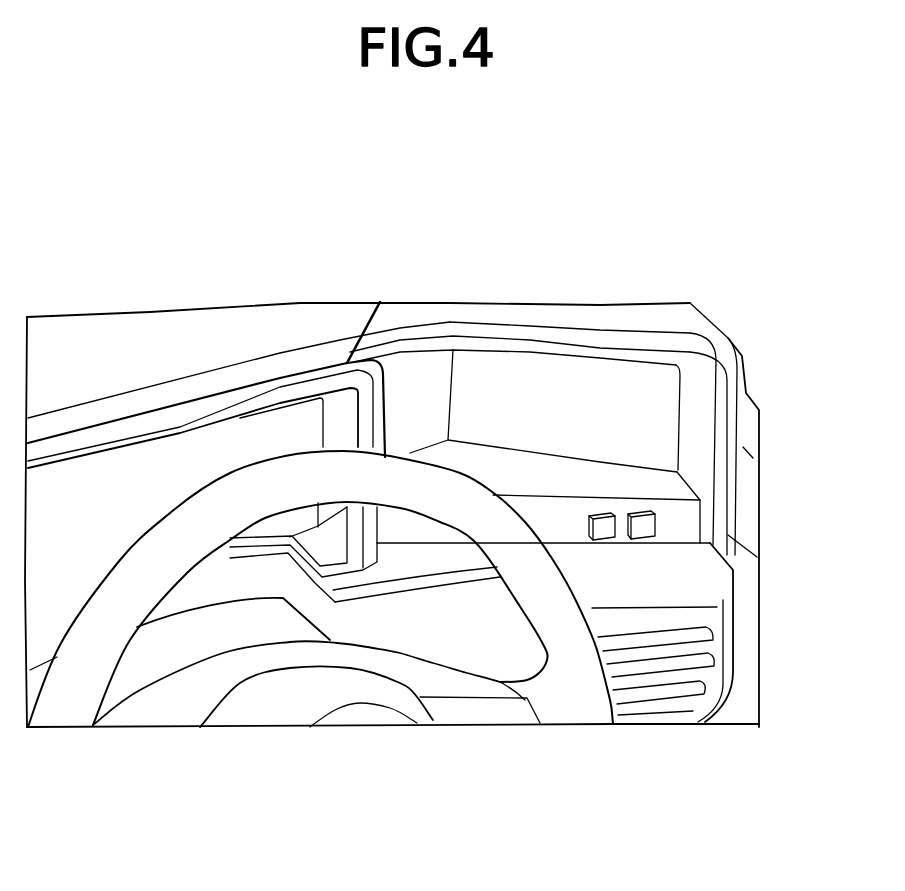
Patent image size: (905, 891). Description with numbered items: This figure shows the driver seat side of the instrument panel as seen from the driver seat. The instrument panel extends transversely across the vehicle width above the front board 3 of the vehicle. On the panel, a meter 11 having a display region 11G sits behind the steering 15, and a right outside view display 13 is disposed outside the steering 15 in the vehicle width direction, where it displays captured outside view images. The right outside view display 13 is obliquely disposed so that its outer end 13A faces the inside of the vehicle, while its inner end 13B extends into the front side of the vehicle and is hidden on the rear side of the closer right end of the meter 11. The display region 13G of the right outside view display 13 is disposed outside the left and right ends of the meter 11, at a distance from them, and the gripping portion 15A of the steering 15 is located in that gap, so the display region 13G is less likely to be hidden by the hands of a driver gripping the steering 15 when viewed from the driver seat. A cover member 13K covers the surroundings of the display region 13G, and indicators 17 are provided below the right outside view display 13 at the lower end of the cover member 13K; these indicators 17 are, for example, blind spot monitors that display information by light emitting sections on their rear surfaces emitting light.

The front board 3 is at (657, 573).
The meter 11 is at (168, 477).
The display region of the meter 11G is at (238, 450).
The right outside view display 13 is at (549, 395).
The outer end of the right outside view display 13A is at (697, 427).
The inner end of the right outside view display 13B is at (348, 362).
The display region of the right outside view display 13G is at (630, 411).
The cover member 13K is at (715, 358).
The steering 15 is at (103, 630).
The gripping portion of the steering 15A is at (580, 705).
The indicator 17 is at (640, 528).